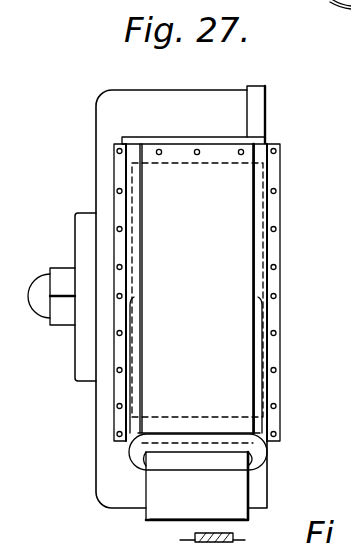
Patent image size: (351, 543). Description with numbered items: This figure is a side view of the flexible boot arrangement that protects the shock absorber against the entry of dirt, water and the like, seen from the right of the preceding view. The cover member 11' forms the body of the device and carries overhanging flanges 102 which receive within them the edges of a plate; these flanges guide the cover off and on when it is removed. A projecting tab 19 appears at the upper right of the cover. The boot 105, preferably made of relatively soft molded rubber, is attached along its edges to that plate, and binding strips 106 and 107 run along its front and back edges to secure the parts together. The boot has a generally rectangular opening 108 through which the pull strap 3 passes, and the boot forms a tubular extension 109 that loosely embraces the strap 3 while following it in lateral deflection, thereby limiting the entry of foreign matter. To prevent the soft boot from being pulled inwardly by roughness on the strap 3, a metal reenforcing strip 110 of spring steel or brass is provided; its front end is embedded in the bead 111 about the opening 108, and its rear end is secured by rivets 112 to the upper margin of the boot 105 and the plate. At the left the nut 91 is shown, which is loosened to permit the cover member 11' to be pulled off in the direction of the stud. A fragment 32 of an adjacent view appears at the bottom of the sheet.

The cover member 11' is at (179, 284).
The tab 19 is at (257, 97).
The overhanging flanges 102 is at (150, 137).
The rivets 112 is at (197, 149).
The binding strip 106 is at (114, 170).
The binding strip 107 is at (275, 172).
The boot 105 is at (240, 227).
The metal reenforcing strip 110 is at (242, 267).
The tubular extension 109 is at (263, 320).
The bead 111 is at (247, 446).
The rectangular opening 108 is at (152, 452).
The pull strap 3 is at (230, 493).
The nut 91 is at (65, 315).
The bar 32 is at (223, 537).